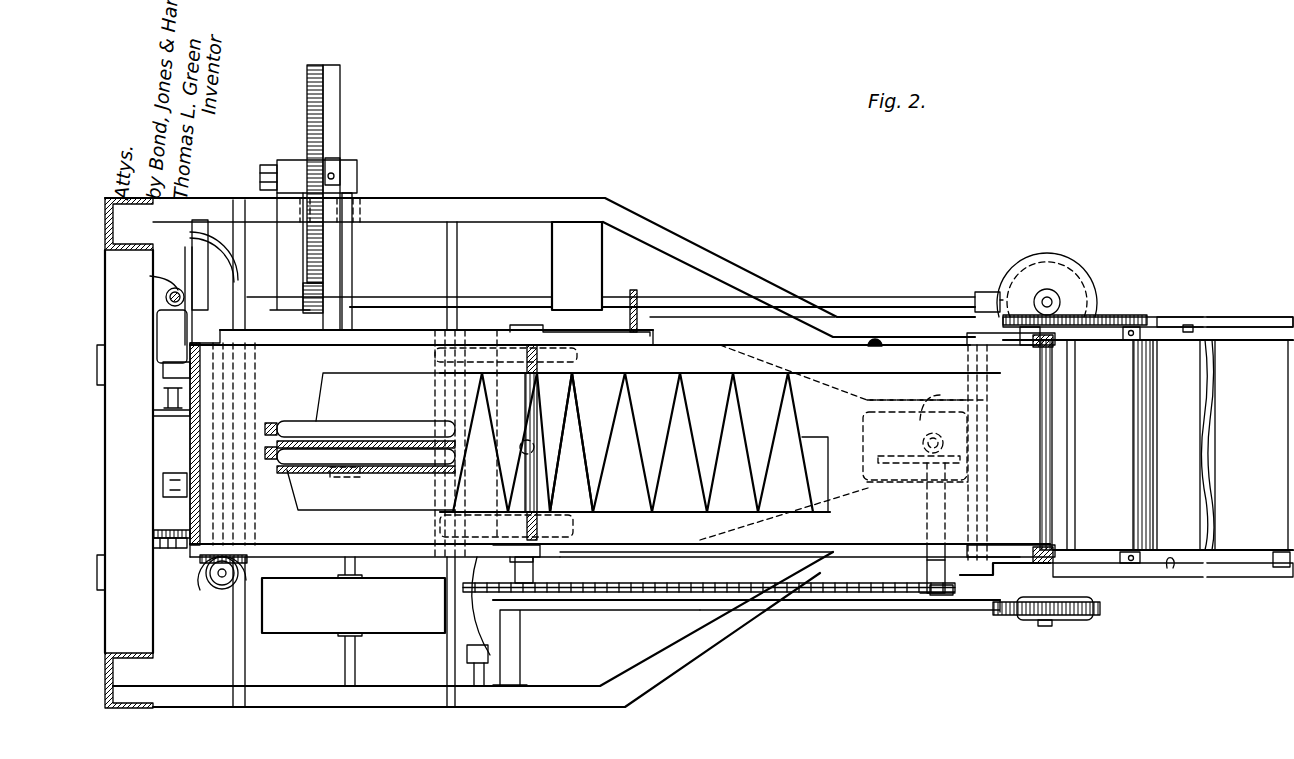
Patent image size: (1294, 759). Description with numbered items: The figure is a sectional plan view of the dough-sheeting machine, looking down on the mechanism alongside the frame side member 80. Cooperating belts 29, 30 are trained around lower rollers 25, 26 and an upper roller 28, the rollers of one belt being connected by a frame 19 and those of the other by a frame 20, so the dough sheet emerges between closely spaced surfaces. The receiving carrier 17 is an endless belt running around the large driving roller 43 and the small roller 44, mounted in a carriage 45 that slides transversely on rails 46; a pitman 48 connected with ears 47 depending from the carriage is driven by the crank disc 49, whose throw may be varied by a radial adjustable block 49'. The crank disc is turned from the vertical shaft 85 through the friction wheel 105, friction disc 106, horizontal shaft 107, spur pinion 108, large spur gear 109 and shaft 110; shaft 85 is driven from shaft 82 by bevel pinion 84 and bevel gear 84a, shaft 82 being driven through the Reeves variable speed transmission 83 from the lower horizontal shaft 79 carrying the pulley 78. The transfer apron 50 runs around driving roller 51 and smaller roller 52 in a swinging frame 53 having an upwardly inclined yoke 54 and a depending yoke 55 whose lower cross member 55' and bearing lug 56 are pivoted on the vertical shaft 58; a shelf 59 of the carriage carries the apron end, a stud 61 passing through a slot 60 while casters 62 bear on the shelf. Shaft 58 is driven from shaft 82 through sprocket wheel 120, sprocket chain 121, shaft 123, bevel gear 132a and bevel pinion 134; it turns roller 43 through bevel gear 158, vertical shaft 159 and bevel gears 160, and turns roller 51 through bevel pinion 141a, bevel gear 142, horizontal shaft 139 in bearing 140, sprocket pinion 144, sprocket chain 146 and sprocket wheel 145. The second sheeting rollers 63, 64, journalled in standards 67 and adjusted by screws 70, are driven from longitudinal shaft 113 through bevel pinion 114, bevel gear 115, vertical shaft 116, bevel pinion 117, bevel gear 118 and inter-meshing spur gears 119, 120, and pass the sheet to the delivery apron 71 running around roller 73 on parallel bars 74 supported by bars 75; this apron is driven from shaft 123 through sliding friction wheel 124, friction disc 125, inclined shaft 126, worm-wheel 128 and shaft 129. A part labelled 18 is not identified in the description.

The receiving carrier 17 is at (290, 548).
The hopper wall 18 is at (790, 408).
The frame 19 is at (270, 460).
The frame 20 is at (271, 423).
The lower roller 25 is at (290, 466).
The lower roller 26 is at (306, 420).
The upper roller 28 is at (653, 369).
The cooperating belt 29 is at (398, 473).
The cooperating belt 30 is at (383, 440).
The driving roller 43 is at (190, 548).
The roller 44 is at (522, 345).
The carriage 45 is at (408, 333).
The rails 46 is at (245, 233).
The ears 47 is at (332, 478).
The pitman 48 is at (352, 250).
The crank disc 49 is at (351, 197).
The radial adjustable block 49' is at (337, 162).
The transfer apron 50 is at (791, 535).
The driving roller 51 is at (540, 552).
The roller 52 is at (1003, 565).
The swinging frame 53 is at (680, 553).
The upwardly inclined yoke 54 is at (975, 340).
The depending yoke member 55 is at (927, 452).
The lower cross member 55' is at (923, 394).
The bearing lug 56 is at (928, 436).
The vertical shaft 58 is at (924, 441).
The ledge or shelf 59 is at (578, 525).
The elongated aperture or slot 60 is at (578, 419).
The stud 61 is at (524, 440).
The anti-friction rollers or casters 62 is at (577, 360).
The sheeting roller 63 is at (1046, 424).
The sheeting roller 64 is at (1079, 445).
The standards 67 is at (1040, 350).
The screws 70 is at (1128, 340).
The delivery apron 71 is at (1173, 445).
The roller 73 is at (1280, 567).
The parallel bars 74 is at (1205, 317).
The bars 75 is at (1185, 333).
The pulley 78 is at (302, 627).
The lower horizontal shaft 79 is at (345, 665).
The frame side member 80 is at (372, 697).
The shaft 82 is at (163, 485).
The Reeves variable speed transmission 83 is at (160, 415).
The bevel pinion 84 is at (163, 366).
The bevel gear 84a is at (160, 355).
The vertical shaft 85 is at (166, 297).
The friction wheel 105 is at (145, 277).
The friction disc 106 is at (188, 264).
The horizontal shaft 107 is at (269, 300).
The spur pinion 108 is at (316, 315).
The large spur gear 109 is at (307, 88).
The shaft 110 is at (268, 166).
The longitudinal shaft 113 is at (498, 300).
The bevel pinion 114 is at (997, 292).
The bevel gear 115 is at (1043, 256).
The vertical shaft 116 is at (1052, 298).
The bevel pinion 117 is at (1055, 302).
The bevel gear 118 is at (1080, 316).
The spur gear 119 is at (1027, 335).
The sprocket wheel 120 is at (160, 548).
The sprocket chain 121 is at (170, 530).
The shaft 123 is at (476, 633).
The sliding friction wheel 124 is at (467, 655).
The friction disc 125 is at (520, 632).
The inclined shaft 126 is at (912, 614).
The worm-wheel 128 is at (1005, 617).
The shaft 129 is at (1050, 626).
The bevel gear 132a is at (640, 318).
The bevel pinion 134 is at (876, 340).
The horizontal shaft 139 is at (927, 562).
The bearing 140 is at (927, 545).
The bevel pinion 141a is at (915, 458).
The bevel gear 142 is at (897, 462).
The sprocket pinion 144 is at (953, 590).
The sprocket wheel 145 is at (533, 575).
The sprocket chain 146 is at (660, 595).
The bevel gear 158 is at (200, 592).
The vertical shaft 159 is at (221, 580).
The bevel gears 160 is at (208, 580).